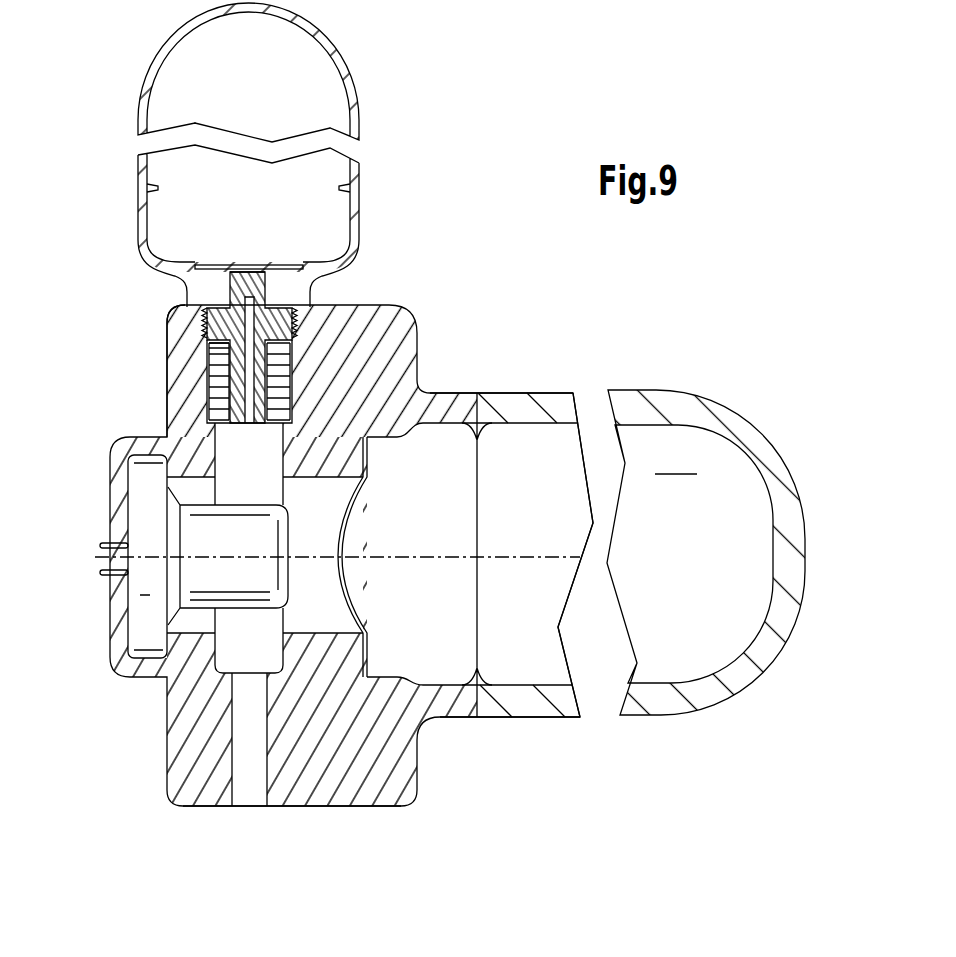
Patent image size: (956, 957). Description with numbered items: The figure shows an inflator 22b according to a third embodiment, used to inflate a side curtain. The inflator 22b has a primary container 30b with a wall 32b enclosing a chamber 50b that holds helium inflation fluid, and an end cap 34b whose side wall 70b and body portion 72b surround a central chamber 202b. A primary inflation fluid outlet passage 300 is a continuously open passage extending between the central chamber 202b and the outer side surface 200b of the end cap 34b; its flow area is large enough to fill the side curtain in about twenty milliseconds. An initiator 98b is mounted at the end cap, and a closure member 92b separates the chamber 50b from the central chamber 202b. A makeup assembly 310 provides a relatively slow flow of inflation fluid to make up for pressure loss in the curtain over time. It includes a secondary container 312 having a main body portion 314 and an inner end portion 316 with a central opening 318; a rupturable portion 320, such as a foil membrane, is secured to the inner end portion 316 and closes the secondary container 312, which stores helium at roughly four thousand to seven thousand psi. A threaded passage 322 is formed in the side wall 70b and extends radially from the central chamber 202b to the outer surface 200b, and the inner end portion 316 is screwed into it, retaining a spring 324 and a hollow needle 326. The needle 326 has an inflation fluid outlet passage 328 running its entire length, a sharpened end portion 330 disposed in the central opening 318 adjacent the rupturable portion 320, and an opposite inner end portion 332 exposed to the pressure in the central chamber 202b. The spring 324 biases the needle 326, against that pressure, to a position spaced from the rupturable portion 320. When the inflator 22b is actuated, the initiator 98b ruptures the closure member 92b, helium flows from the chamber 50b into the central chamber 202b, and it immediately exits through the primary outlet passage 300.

The makeup assembly 310 is at (280, 137).
The secondary container 312 is at (253, 137).
The main body portion 314 is at (143, 112).
The inner end portion 316 is at (140, 222).
The central opening 318 is at (228, 283).
The rupturable portion 320 is at (213, 262).
The threaded passage 322 is at (292, 388).
The spring 324 is at (210, 388).
The needle 326 is at (209, 357).
The inflation fluid outlet passage 328 is at (206, 320).
The sharpened end portion 330 is at (250, 280).
The inner end portion 332 is at (222, 440).
The inflator 22b is at (757, 298).
The primary container 30b is at (742, 544).
The housing wall 32b is at (810, 512).
The end cap 34b is at (422, 760).
The chamber 50b is at (676, 463).
The side wall 70b is at (358, 777).
The body portion 72b is at (200, 739).
The closure member 92b is at (347, 597).
The initiator 98b is at (110, 601).
The outer side surface 200b is at (317, 807).
The central chamber 202b is at (345, 502).
The primary inflation fluid outlet passage 300 is at (247, 762).